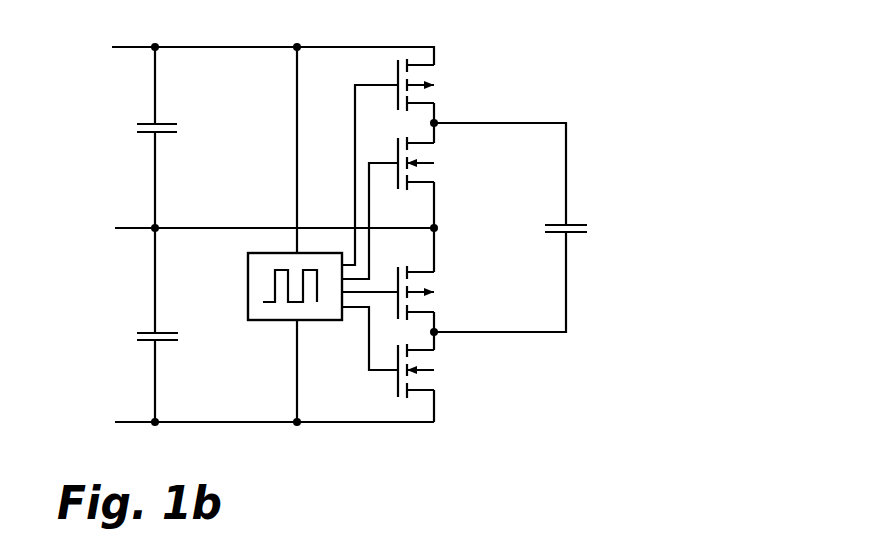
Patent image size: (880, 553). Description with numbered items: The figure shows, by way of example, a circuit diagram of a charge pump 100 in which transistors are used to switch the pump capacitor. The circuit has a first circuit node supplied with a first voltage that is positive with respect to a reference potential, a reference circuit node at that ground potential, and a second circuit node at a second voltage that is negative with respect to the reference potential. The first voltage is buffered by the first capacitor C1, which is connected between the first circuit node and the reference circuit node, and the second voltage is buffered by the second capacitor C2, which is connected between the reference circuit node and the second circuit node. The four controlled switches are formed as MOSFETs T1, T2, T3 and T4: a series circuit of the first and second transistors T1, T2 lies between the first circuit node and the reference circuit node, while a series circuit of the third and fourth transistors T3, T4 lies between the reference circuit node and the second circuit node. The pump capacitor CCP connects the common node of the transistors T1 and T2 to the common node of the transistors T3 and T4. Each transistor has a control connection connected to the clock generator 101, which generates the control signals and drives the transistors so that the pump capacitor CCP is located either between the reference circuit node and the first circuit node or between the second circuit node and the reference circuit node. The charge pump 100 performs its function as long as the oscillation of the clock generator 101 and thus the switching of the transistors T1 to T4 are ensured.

The charge pump 100 is at (666, 319).
The clock generator 101 is at (248, 278).
The first MOSFET T1 is at (409, 162).
The second MOSFET T2 is at (409, 208).
The third MOSFET T3 is at (409, 293).
The fourth MOSFET T4 is at (409, 352).
The first capacitor C1 is at (141, 130).
The second capacitor C2 is at (142, 338).
The pump capacitor CCP is at (534, 227).